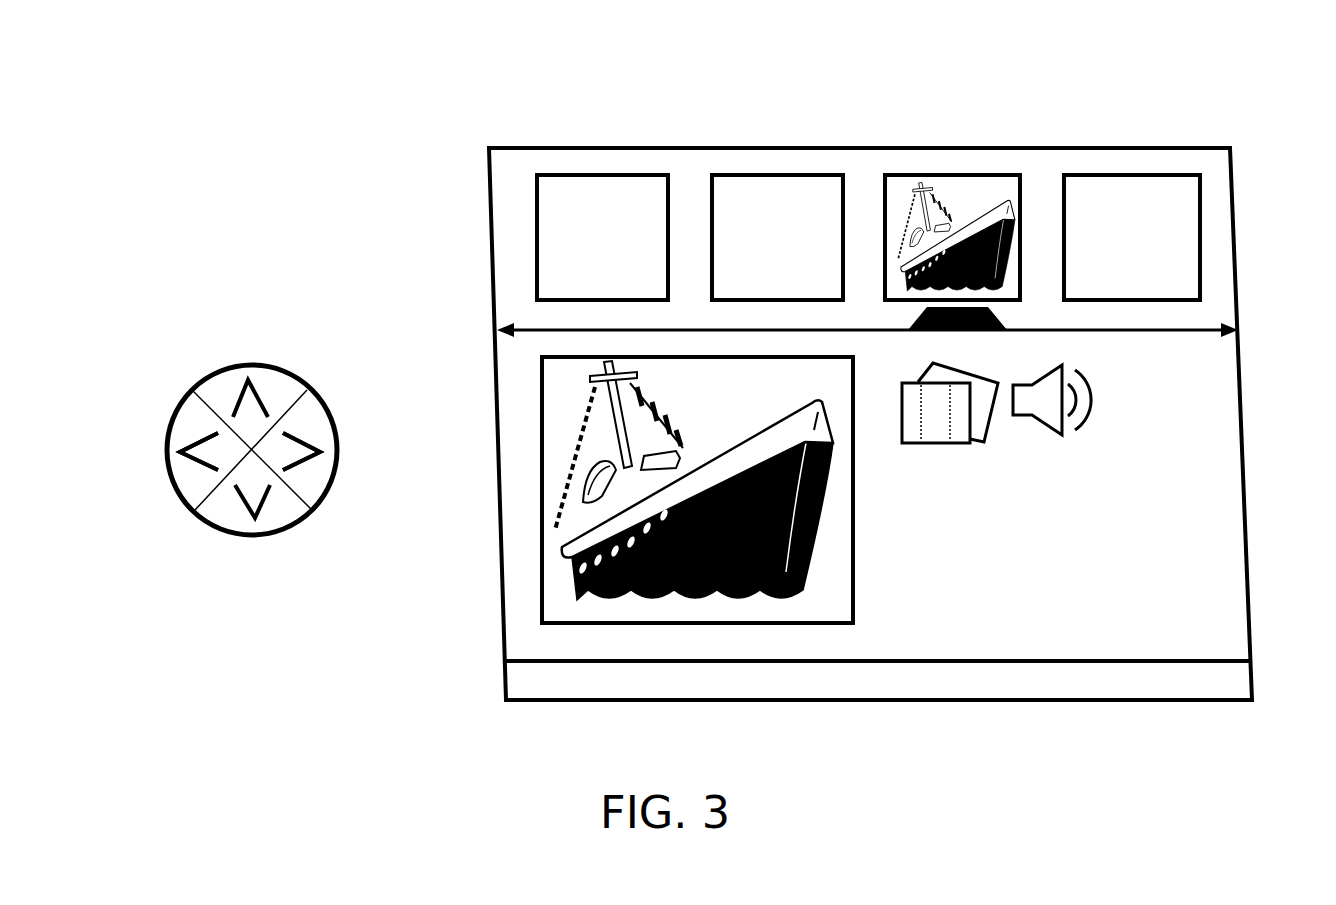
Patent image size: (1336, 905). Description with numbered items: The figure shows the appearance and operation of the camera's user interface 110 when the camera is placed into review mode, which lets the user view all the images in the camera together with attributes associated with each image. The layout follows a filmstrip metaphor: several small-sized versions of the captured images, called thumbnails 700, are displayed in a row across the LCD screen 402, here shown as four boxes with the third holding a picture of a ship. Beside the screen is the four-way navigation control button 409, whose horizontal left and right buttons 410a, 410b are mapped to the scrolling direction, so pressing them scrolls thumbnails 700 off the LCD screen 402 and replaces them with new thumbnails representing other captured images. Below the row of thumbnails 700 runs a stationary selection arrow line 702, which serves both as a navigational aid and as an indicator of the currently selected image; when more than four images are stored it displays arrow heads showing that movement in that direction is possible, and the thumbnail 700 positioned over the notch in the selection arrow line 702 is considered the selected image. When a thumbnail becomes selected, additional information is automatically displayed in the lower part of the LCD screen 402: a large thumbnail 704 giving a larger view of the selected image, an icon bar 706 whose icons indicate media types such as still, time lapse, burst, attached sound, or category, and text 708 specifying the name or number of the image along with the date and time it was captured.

The digital camera display screen 110 is at (978, 43).
The LCD screen 402 is at (1015, 700).
The thumbnails 700 is at (1135, 173).
The selection arrow line 702 is at (538, 328).
The large thumbnail 704 is at (537, 507).
The icon bar 706 is at (1185, 393).
The text 708 is at (1163, 509).
The four-way navigation control button 409 is at (245, 366).
The left button 410a is at (170, 475).
The right button 410b is at (335, 473).